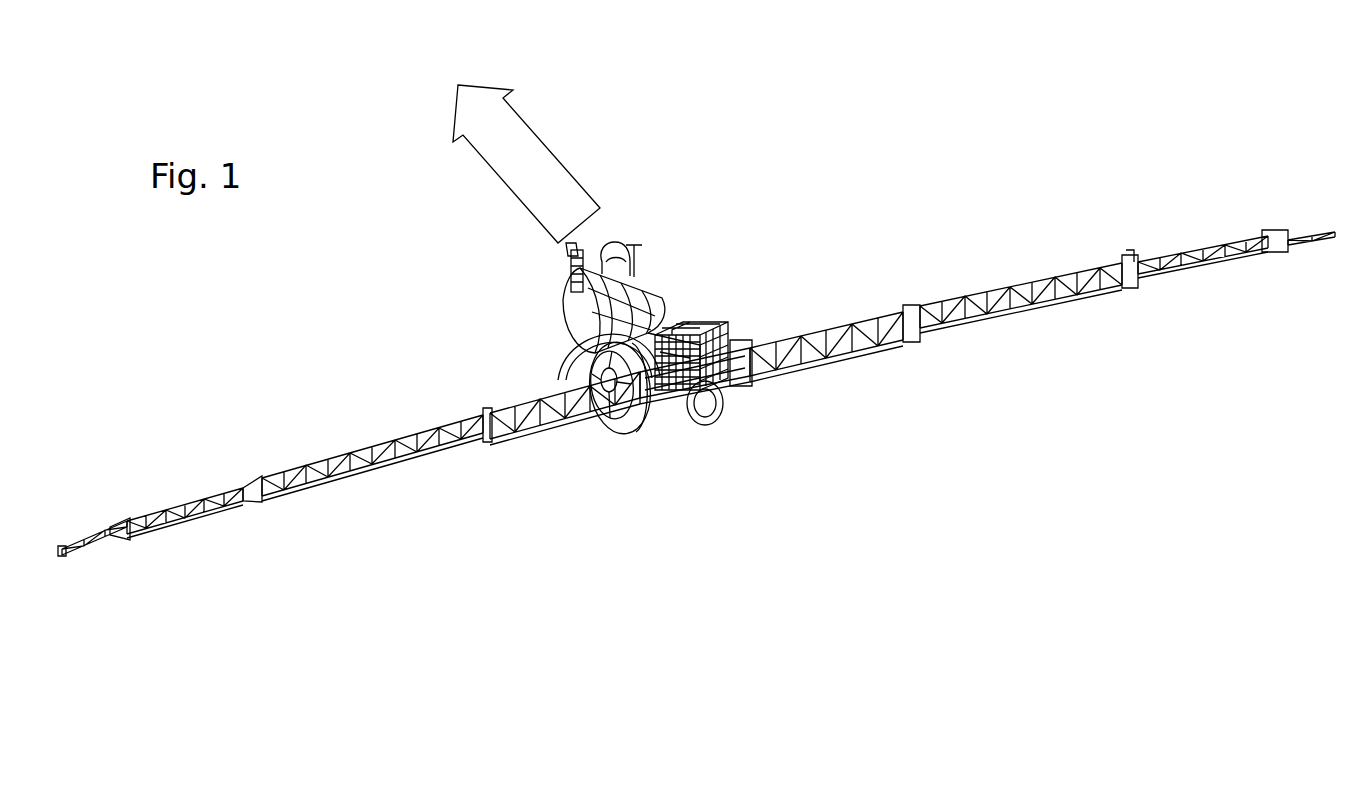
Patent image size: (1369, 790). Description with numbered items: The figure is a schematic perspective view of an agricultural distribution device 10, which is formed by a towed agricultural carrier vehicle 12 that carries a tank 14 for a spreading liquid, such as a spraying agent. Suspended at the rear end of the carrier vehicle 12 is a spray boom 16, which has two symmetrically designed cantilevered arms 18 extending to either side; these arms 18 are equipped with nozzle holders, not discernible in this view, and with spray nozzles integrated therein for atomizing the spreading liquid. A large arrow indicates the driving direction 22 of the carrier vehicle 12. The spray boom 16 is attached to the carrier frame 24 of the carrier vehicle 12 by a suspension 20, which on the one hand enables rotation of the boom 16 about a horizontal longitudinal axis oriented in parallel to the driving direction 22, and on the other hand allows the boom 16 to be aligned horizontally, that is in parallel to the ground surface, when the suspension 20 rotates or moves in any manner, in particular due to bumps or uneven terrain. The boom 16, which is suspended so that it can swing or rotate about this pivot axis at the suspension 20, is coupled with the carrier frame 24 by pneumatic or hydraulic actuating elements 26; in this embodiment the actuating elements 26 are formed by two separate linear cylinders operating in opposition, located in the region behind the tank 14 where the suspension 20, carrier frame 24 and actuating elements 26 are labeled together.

The agricultural distribution device 10 is at (877, 125).
The agricultural carrier vehicle 12 is at (665, 272).
The tank 14 is at (583, 322).
The spray boom 16 is at (558, 457).
The cantilevered arms 18 is at (352, 472).
The suspension 20 is at (720, 337).
The driving direction 22 is at (526, 164).
The carrier frame 24 is at (714, 356).
The actuating elements 26 is at (691, 328).